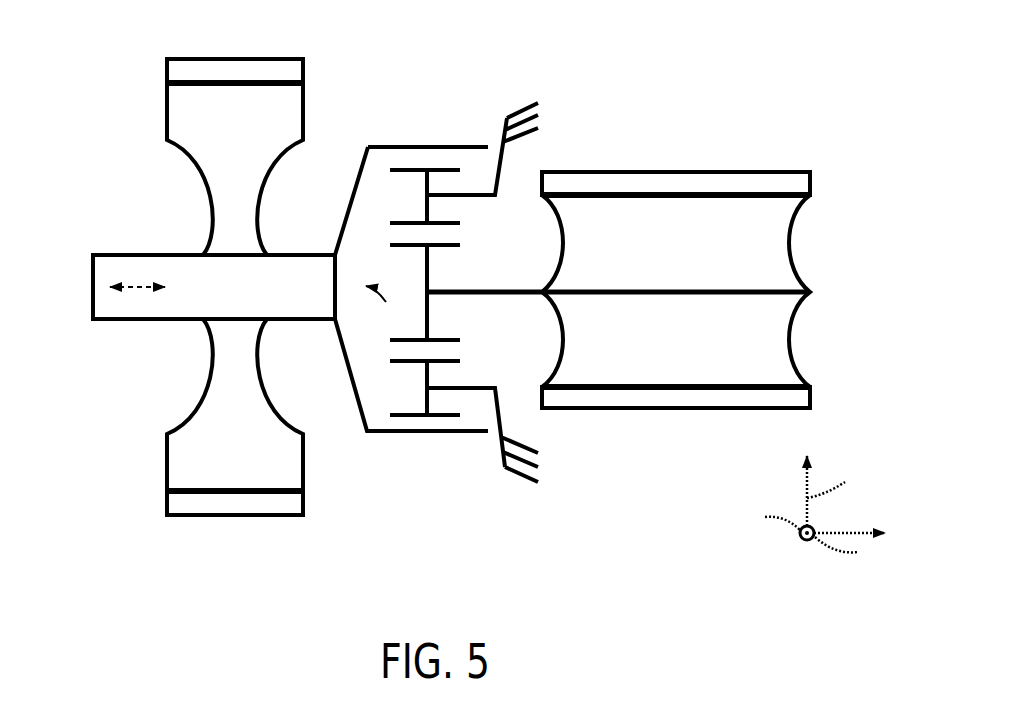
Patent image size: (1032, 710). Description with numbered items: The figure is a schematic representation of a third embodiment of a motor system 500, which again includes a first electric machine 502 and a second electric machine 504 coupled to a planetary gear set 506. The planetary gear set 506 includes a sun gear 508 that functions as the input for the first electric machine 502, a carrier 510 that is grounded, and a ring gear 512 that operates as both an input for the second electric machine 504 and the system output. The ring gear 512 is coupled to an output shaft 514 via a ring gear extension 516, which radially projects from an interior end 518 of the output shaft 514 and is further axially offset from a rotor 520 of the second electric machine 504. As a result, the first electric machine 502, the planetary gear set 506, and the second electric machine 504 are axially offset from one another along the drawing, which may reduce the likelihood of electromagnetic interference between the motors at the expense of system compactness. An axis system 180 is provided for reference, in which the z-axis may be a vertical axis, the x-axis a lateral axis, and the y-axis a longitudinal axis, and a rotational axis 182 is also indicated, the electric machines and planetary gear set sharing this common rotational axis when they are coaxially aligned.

The motor system 500 is at (873, 70).
The first electric machine 502 is at (834, 152).
The second electric machine 504 is at (64, 61).
The planetary gear set 506 is at (453, 66).
The sun gear 508 is at (427, 268).
The carrier 510 is at (498, 170).
The ring gear 512 is at (393, 147).
The output shaft 514 is at (102, 255).
The ring gear extension 516 is at (357, 175).
The interior end 518 is at (383, 307).
The rotor 520 is at (167, 115).
The axis system 180 is at (888, 481).
The rotational axis 182 is at (128, 285).